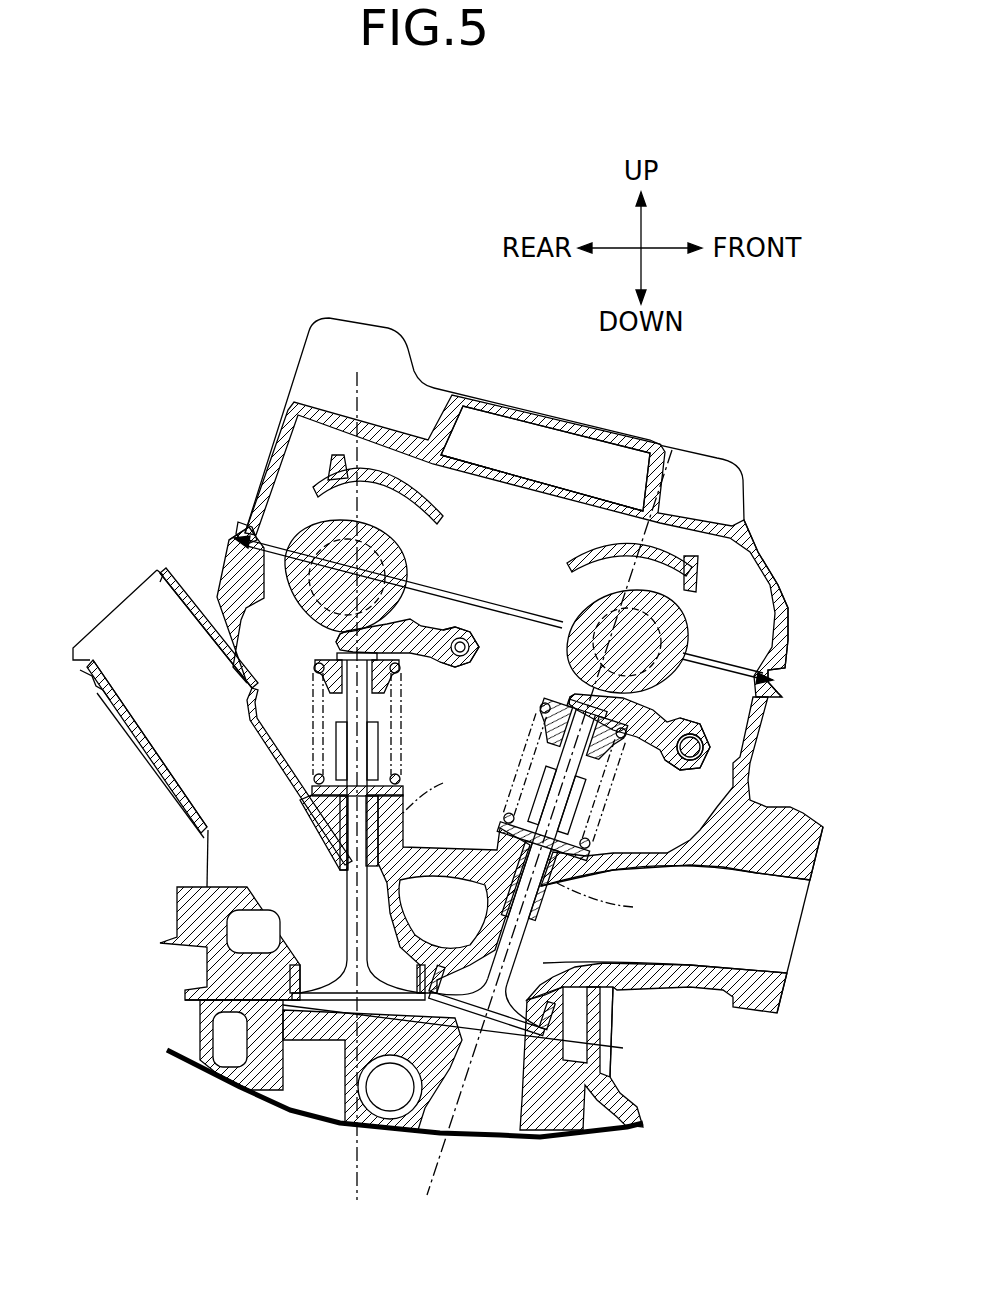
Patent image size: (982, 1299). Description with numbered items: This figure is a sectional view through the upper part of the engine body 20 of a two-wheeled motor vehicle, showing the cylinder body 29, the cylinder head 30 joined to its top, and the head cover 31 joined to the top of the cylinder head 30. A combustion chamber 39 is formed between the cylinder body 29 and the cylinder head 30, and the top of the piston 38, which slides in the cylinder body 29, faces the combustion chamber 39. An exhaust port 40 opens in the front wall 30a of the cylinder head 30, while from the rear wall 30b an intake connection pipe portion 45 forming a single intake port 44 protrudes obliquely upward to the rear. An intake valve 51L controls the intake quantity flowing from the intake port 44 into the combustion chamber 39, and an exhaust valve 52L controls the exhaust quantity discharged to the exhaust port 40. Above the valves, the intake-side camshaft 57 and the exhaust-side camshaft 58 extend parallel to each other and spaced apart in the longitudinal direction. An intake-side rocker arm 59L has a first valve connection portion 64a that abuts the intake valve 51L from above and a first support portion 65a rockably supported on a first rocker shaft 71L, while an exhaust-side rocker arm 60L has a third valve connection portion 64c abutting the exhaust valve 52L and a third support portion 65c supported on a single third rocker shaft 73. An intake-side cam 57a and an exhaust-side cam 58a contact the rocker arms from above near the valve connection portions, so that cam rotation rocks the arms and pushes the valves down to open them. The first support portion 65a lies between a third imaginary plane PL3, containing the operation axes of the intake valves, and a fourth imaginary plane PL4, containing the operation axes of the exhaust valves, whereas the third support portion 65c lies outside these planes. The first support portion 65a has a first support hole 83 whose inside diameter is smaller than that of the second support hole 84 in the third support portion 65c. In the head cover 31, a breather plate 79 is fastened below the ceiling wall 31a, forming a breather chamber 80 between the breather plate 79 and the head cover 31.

The engine body 20 is at (622, 1077).
The cylinder body 29 is at (203, 1063).
The cylinder head 30 is at (213, 971).
The front wall 30a is at (748, 762).
The rear wall 30b is at (233, 577).
The head cover 31 is at (772, 578).
The ceiling wall 31a is at (497, 400).
The piston 38 is at (497, 1123).
The combustion chamber 39 is at (373, 1007).
The exhaust port 40 is at (773, 920).
The intake port 44 is at (130, 630).
The intake connection pipe portion 45 is at (127, 707).
The intake valve 51L is at (353, 920).
The exhaust valve 52L is at (520, 930).
The intake-side camshaft 57 is at (306, 582).
The intake-side cam 57a is at (307, 530).
The exhaust-side camshaft 58 is at (668, 672).
The exhaust-side cam 58a is at (678, 620).
The intake-side rocker arm 59L is at (420, 632).
The exhaust-side rocker arm 60L is at (653, 740).
The first valve connection portion 64a is at (340, 637).
The third valve connection portion 64c is at (570, 695).
The first support portion 65a is at (480, 643).
The third support portion 65c is at (705, 768).
The first rocker shaft 71L is at (478, 654).
The third rocker shaft 73 is at (705, 746).
The breather plate 79 is at (580, 497).
The breather chamber 80 is at (517, 466).
The first support hole 83 is at (452, 654).
The second support hole 84 is at (688, 765).
The third imaginary plane PL3 is at (443, 785).
The fourth imaginary plane PL4 is at (620, 902).